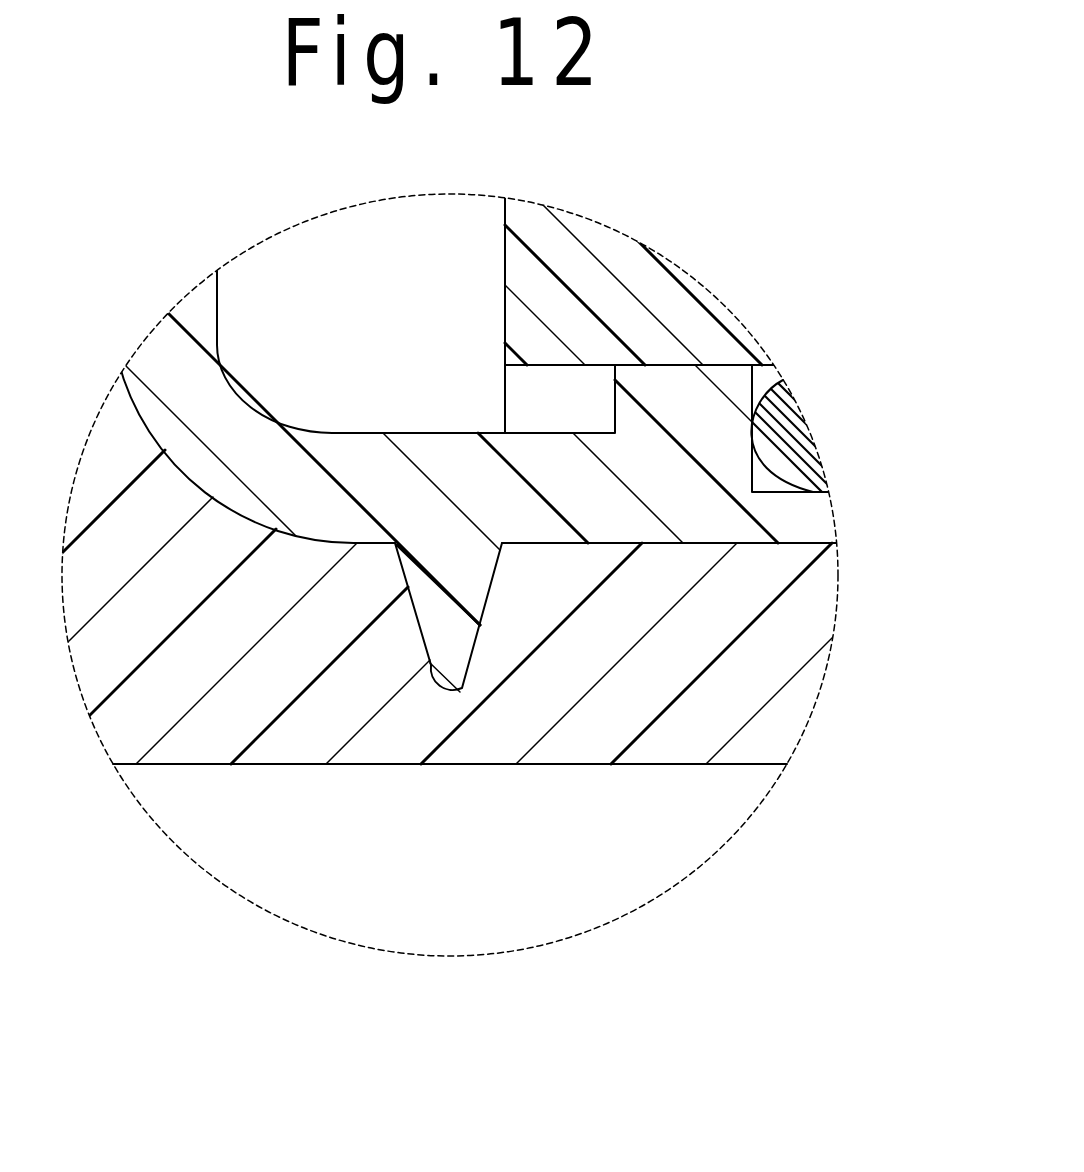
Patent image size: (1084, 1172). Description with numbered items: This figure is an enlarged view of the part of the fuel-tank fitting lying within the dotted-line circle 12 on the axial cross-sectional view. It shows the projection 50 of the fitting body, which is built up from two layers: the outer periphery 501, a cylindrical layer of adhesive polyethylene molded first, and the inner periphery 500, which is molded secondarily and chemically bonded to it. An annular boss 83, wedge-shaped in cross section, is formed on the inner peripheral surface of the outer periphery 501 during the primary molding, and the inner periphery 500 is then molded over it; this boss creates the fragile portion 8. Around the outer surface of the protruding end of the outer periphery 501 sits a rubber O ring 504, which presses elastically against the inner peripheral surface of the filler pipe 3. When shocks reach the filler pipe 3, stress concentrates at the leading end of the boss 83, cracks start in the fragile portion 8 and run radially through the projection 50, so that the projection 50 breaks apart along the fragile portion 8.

The circle 12 is at (272, 238).
The filler pipe 3 is at (623, 257).
The O ring 504 is at (807, 433).
The outer periphery 501 is at (383, 457).
The fragile portion 8 is at (447, 705).
The annular boss 83 is at (453, 627).
The projection 50 is at (450, 663).
The inner periphery 500 is at (505, 727).